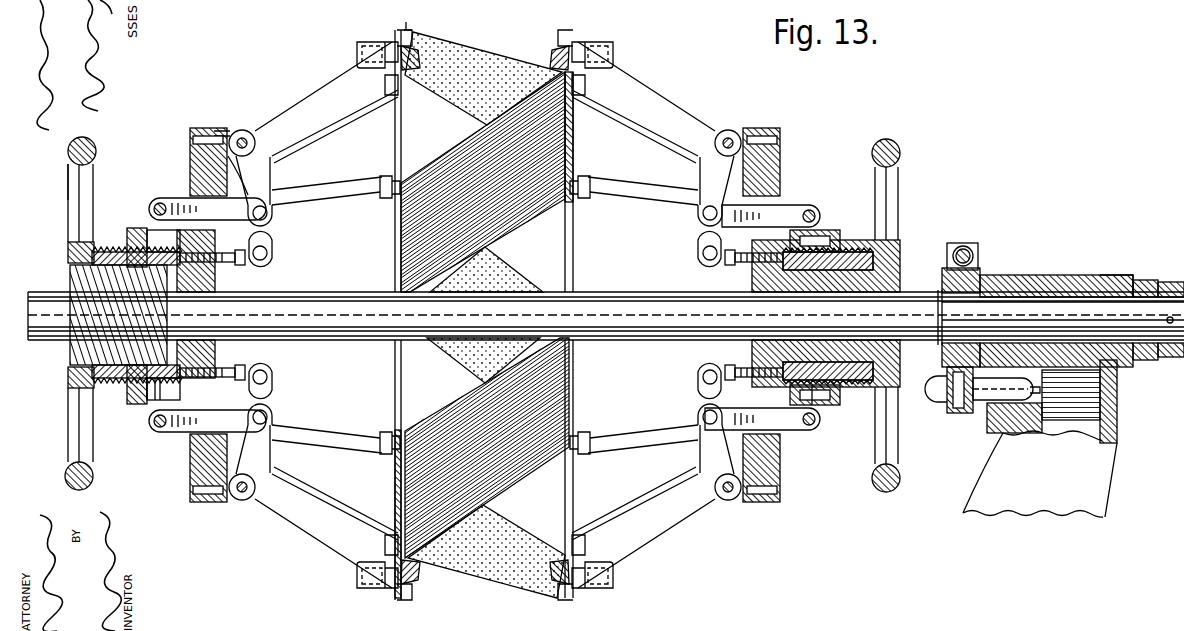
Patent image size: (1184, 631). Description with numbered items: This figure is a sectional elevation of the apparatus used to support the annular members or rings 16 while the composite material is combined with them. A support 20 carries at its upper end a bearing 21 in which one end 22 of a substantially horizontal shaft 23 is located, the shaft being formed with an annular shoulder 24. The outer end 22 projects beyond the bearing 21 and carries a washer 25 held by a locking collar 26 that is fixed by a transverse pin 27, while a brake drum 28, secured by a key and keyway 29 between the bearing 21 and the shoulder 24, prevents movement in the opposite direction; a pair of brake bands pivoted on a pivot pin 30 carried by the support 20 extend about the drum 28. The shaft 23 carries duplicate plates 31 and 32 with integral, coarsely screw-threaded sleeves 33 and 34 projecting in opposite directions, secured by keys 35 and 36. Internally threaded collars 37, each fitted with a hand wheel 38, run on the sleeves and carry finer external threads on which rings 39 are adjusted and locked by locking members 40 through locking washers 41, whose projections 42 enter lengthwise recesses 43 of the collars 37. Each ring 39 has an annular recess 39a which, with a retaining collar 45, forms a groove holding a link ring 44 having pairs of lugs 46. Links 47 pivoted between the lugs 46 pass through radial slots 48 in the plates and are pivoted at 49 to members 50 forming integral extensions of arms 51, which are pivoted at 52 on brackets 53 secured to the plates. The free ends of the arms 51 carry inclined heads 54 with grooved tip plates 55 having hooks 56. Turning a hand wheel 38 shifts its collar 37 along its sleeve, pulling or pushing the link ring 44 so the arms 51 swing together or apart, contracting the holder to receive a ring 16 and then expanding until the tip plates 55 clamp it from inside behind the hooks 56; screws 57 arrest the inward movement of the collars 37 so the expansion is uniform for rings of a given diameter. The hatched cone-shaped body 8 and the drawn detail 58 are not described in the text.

The cone 8 is at (520, 480).
The ring 16 is at (573, 251).
The support 20 is at (985, 478).
The bearing 21 is at (1050, 275).
The end of shaft 22 is at (1102, 292).
The shaft 23 is at (606, 316).
The annular shoulder 24 is at (956, 312).
The washer 25 is at (1145, 362).
The locking collar 26 is at (1168, 281).
The pin 27 is at (1165, 320).
The brake drum 28 is at (942, 285).
The key and keyway 29 is at (937, 300).
The pivot pin 30 is at (990, 393).
The plate 31 is at (190, 150).
The plate 32 is at (780, 157).
The sleeve 33 is at (165, 303).
The sleeve 34 is at (840, 268).
The key 35 is at (216, 289).
The key 36 is at (752, 291).
The collar 37 is at (123, 247).
The hand wheel 38 is at (900, 153).
The ring 39 is at (147, 402).
The annular recess 39a is at (152, 402).
The locking member 40 is at (128, 400).
The locking washer 41 is at (133, 400).
The projection 42 is at (135, 228).
The recess 43 is at (97, 245).
The link ring 44 is at (817, 230).
The retaining collar 45 is at (172, 415).
The lug 46 is at (160, 203).
The link 47 is at (484, 212).
The slot 48 is at (192, 200).
The pivotal connection 49 is at (277, 200).
The member 50 is at (254, 211).
The arm 51 is at (312, 92).
The pivot 52 is at (243, 140).
The bracket 53 is at (228, 130).
The head 54 is at (375, 203).
The tip plate 55 is at (415, 35).
The hook 56 is at (405, 597).
The screw 57 is at (276, 370).
The pin 58 is at (410, 28).